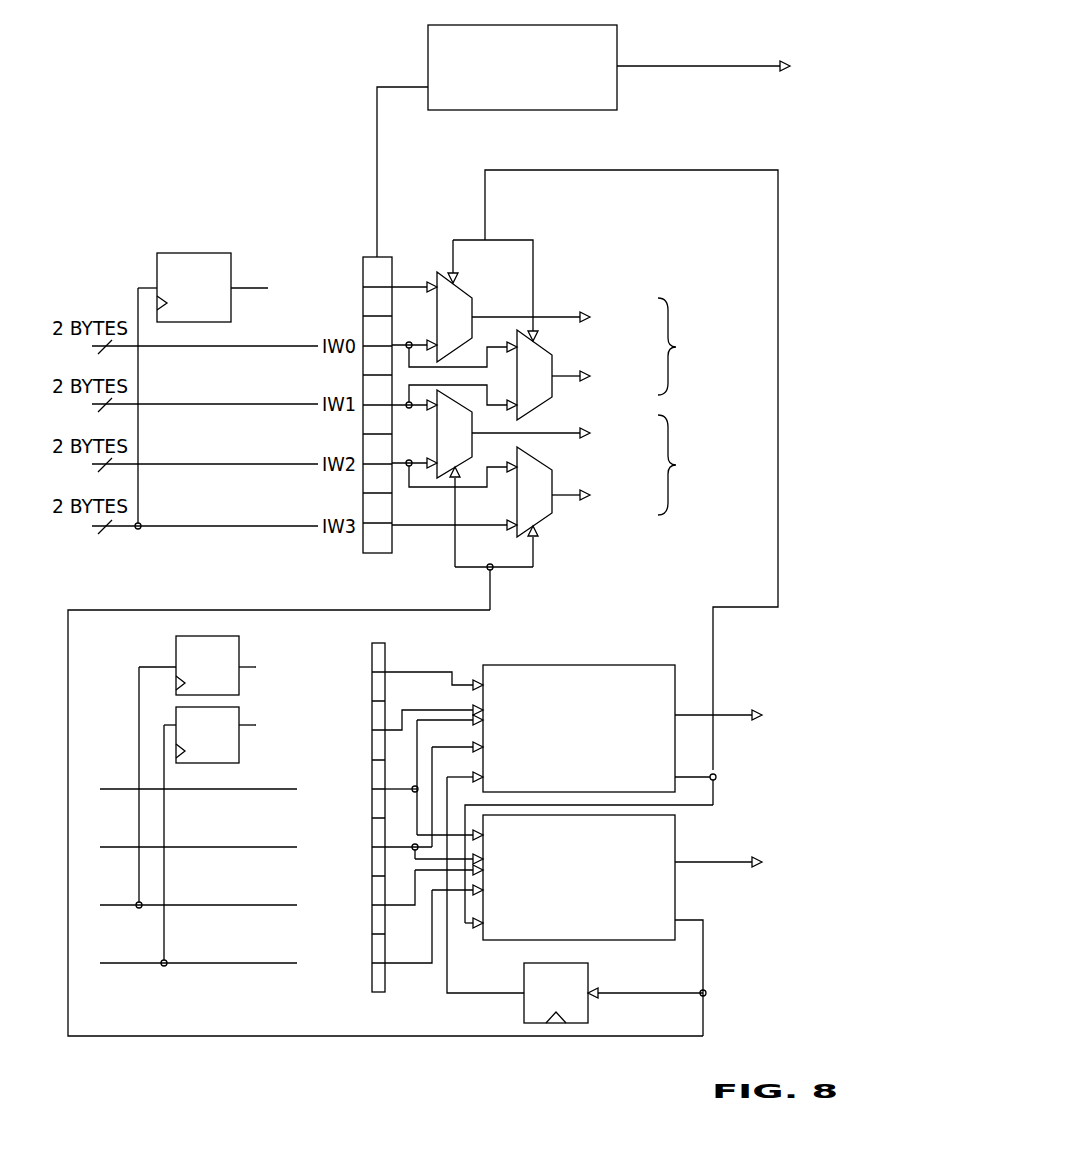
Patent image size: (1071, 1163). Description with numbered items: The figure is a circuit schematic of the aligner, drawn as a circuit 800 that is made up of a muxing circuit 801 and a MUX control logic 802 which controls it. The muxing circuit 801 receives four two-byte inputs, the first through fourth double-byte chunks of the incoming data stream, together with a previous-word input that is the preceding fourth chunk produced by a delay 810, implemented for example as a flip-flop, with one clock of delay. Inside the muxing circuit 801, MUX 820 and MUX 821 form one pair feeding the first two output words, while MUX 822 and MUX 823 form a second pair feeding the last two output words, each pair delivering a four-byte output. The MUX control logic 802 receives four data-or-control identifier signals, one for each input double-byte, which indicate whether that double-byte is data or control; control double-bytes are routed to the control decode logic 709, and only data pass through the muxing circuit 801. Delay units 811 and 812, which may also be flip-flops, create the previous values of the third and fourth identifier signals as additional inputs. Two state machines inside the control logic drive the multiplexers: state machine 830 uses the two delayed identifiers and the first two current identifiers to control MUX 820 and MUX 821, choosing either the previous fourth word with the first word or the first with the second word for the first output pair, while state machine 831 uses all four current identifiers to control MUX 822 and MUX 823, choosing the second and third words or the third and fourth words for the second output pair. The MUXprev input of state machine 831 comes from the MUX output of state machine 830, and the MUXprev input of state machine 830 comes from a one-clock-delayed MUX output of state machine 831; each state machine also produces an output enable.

The circuit 800 is at (172, 169).
The control decode logic 709 is at (446, 112).
The muxing circuit 801 is at (628, 290).
The MUX control logic 802 is at (725, 975).
The delay 810 is at (245, 391).
The delay unit 811 is at (245, 772).
The delay unit 812 is at (261, 836).
The MUX 820 is at (457, 298).
The MUX 821 is at (540, 357).
The MUX 822 is at (462, 431).
The MUX 823 is at (540, 473).
The state machine 830 is at (567, 665).
The state machine 831 is at (677, 892).